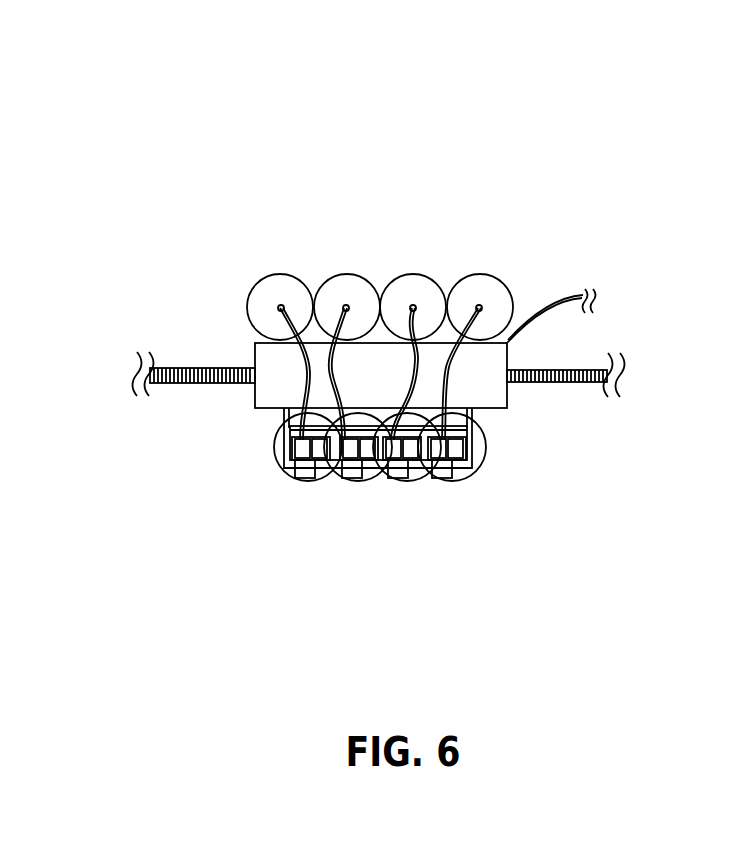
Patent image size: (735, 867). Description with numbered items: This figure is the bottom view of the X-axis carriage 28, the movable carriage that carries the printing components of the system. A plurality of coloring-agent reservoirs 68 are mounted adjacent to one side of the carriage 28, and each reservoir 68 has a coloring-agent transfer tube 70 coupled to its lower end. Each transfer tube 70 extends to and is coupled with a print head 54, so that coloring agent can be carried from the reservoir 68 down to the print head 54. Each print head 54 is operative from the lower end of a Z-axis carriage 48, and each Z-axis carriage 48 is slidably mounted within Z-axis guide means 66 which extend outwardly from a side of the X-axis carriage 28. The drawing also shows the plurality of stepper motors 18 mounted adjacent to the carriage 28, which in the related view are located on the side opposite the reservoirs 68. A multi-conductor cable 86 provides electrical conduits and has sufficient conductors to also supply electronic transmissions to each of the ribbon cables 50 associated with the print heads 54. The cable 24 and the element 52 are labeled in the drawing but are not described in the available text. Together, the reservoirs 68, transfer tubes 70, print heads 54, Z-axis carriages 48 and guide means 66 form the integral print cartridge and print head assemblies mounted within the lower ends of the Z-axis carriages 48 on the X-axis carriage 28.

The stepper motor 18 is at (274, 458).
The cable 24 is at (576, 367).
The X-axis carriage 28 is at (508, 357).
The Z-axis carriage 48 is at (473, 425).
The ribbon cable 50 is at (298, 480).
The circuit board 52 is at (468, 443).
The print head 54 is at (281, 466).
The Z-axis guide means 66 is at (473, 452).
The coloring-agent reservoir 68 is at (285, 297).
The coloring-agent transfer tube 70 is at (428, 330).
The multi-conductor cable 86 is at (566, 290).